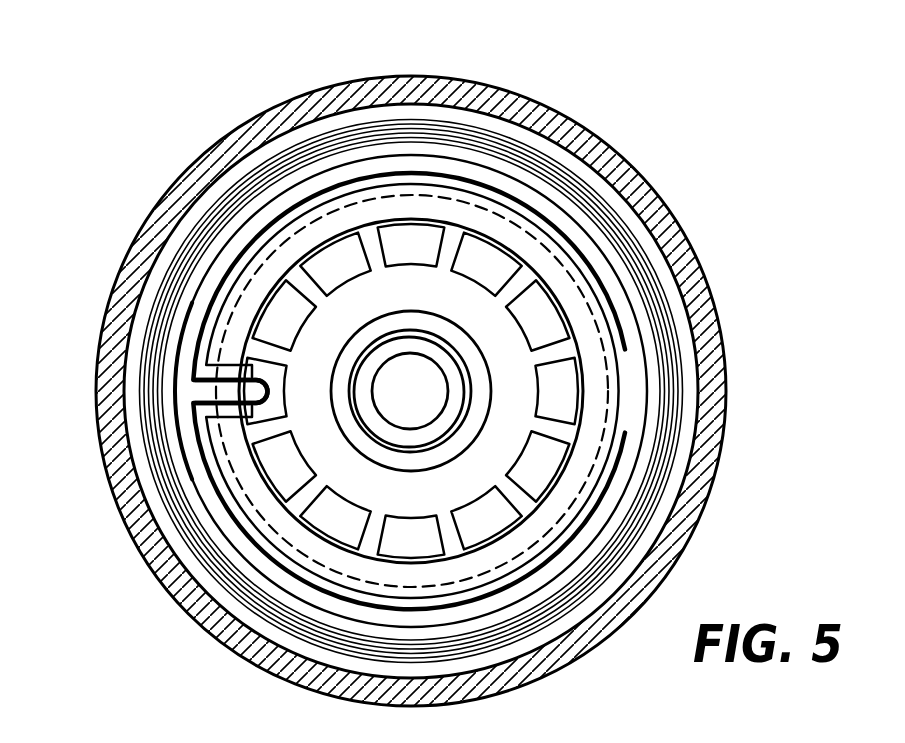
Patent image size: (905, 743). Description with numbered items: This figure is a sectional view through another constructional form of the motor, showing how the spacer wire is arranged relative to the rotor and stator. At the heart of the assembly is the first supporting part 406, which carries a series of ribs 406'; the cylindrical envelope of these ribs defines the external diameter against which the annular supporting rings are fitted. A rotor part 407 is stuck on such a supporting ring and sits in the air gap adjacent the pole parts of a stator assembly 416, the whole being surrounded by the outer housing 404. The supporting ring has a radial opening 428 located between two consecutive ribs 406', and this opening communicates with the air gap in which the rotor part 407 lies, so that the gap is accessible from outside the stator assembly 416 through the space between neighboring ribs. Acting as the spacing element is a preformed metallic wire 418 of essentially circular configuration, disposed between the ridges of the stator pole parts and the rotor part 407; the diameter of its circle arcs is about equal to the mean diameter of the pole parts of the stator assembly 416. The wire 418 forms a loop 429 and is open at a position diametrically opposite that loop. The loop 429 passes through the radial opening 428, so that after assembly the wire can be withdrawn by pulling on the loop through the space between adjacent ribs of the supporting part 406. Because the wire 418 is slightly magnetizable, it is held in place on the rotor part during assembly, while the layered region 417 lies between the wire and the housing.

The outer housing sleeve 404 is at (640, 178).
The first supporting part 406 is at (322, 384).
The ribs 406' is at (354, 361).
The rotor part 407 is at (332, 172).
The stator assembly 416 is at (253, 207).
The outer winding layer 417 is at (444, 130).
The preformed metallic wire 418 is at (513, 194).
The radial opening 428 is at (227, 390).
The loop 429 is at (250, 420).